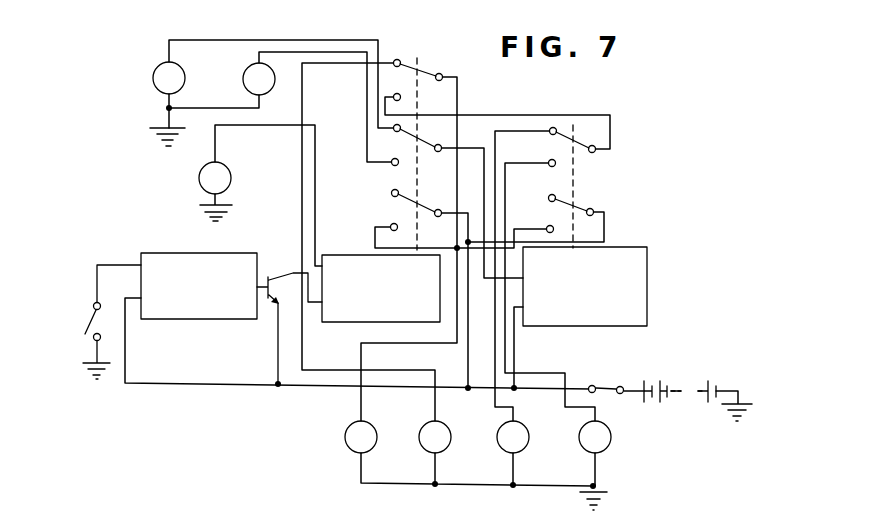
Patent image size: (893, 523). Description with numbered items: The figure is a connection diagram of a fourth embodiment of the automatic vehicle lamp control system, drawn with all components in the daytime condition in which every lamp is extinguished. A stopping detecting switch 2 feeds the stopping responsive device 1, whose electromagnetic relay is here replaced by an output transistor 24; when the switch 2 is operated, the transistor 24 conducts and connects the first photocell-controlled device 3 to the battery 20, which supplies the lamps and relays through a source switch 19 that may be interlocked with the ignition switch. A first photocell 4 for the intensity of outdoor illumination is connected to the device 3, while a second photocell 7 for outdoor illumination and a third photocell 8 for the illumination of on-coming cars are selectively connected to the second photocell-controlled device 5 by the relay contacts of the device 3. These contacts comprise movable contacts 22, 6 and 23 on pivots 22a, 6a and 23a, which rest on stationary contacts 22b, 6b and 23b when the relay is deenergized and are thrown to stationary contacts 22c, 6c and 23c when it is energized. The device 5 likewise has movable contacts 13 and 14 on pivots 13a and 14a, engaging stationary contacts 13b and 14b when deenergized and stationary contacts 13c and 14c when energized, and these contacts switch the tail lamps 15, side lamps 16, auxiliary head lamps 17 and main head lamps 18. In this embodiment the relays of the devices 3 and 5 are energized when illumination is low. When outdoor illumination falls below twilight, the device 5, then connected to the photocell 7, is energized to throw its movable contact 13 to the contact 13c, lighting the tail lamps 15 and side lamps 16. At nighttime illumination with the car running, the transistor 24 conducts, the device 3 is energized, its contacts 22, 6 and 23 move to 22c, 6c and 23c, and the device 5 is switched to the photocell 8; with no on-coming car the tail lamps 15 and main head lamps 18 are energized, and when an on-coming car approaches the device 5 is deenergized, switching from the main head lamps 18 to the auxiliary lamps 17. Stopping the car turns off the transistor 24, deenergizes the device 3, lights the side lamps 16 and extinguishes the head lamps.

The stopping responsive device 1 is at (160, 319).
The stopping detecting switch 2 is at (57, 383).
The first photocell-controlled device 3 is at (340, 322).
The first photocell 4 is at (199, 181).
The second photocell-controlled device 5 is at (615, 327).
The movable contact 6 is at (422, 144).
The pivot 6a is at (438, 161).
The stationary contact 6b is at (390, 139).
The stationary contact 6c is at (387, 172).
The second photocell 7 is at (155, 70).
The third photocell 8 is at (248, 63).
The movable contact 13 is at (575, 205).
The pivot 13a is at (590, 223).
The stationary contact 13b is at (538, 196).
The stationary contact 13c is at (537, 220).
The movable contact 14 is at (576, 139).
The pivot 14a is at (605, 161).
The stationary contact 14b is at (538, 140).
The stationary contact 14c is at (538, 173).
The tail lamps 15 is at (345, 441).
The side lamps 16 is at (419, 437).
The auxiliary head lamps 17 is at (503, 453).
The main head lamps 18 is at (600, 450).
The source switch 19 is at (606, 386).
The battery 20 is at (688, 391).
The movable contact 22 is at (437, 72).
The pivot 22a is at (443, 89).
The stationary contact 22b is at (407, 54).
The stationary contact 22c is at (396, 89).
The movable contact 23 is at (422, 207).
The pivot 23a is at (438, 225).
The stationary contact 23b is at (379, 195).
The stationary contact 23c is at (379, 221).
The output transistor 24 is at (268, 277).